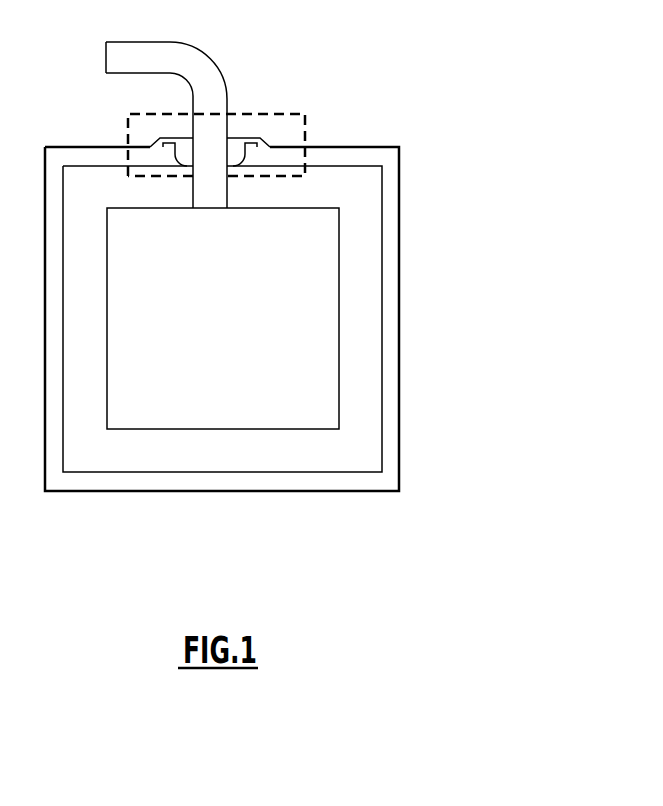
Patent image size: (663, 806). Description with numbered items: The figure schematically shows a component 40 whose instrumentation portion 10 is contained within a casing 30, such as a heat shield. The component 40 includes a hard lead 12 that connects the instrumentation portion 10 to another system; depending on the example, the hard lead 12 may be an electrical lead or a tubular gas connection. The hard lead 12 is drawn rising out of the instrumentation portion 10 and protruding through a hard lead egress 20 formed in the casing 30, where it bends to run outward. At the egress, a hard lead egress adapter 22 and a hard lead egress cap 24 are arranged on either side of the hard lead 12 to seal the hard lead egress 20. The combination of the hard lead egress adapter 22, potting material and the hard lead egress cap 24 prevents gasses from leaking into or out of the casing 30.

The instrumentation portion 10 is at (229, 325).
The hard lead 12 is at (205, 57).
The hard lead egress 20 is at (231, 123).
The hard lead egress adapter 22 is at (188, 152).
The hard lead egress cap 24 is at (242, 140).
The casing 30 is at (388, 325).
The component 40 is at (474, 169).